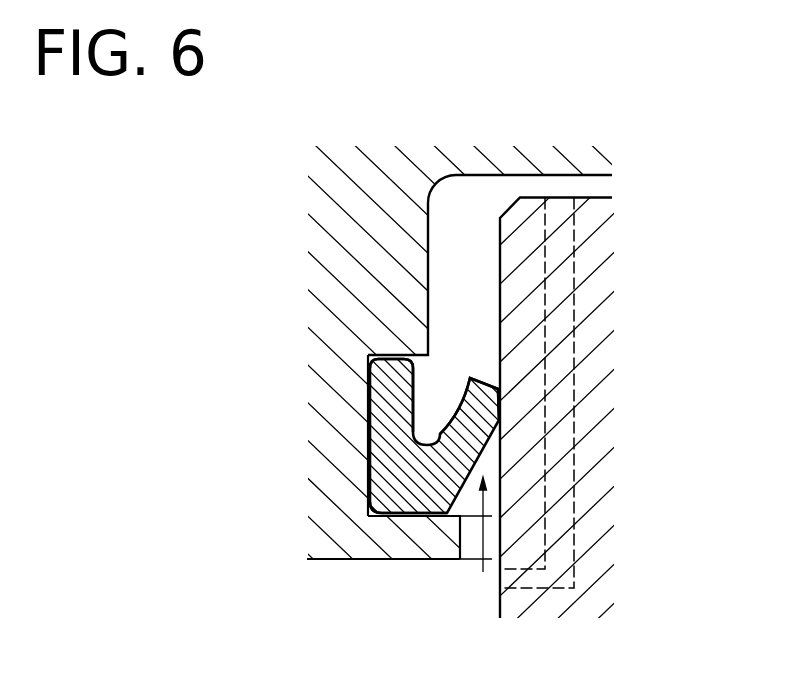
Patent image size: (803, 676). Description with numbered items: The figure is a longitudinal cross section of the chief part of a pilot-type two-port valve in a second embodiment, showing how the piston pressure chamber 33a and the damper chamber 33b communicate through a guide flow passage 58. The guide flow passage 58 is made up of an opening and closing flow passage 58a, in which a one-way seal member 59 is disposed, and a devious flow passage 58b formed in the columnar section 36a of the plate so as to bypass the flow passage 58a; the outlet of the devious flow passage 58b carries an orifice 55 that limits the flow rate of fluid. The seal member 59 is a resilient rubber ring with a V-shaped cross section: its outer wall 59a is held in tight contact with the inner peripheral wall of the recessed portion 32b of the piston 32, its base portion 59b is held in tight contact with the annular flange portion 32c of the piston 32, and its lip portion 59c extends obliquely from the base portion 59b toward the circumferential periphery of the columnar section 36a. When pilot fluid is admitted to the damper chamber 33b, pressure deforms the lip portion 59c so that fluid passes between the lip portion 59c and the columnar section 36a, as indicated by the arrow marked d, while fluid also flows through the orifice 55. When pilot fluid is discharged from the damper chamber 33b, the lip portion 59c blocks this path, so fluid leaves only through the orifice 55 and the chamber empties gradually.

The piston 32 is at (343, 540).
The recessed portion 32b is at (368, 499).
The annular flange portion 32c is at (440, 545).
The piston pressure chamber 33a is at (471, 617).
The damper chamber 33b is at (479, 275).
The columnar section 36a is at (530, 202).
The orifice 55 is at (518, 580).
The guide flow passage 58 is at (418, 252).
The opening and closing flow passage 58a is at (470, 313).
The devious flow passage 58b is at (578, 528).
The seal member 59 is at (366, 456).
The outer wall 59a is at (403, 395).
The base portion 59b is at (420, 505).
The lip portion 59c is at (485, 413).